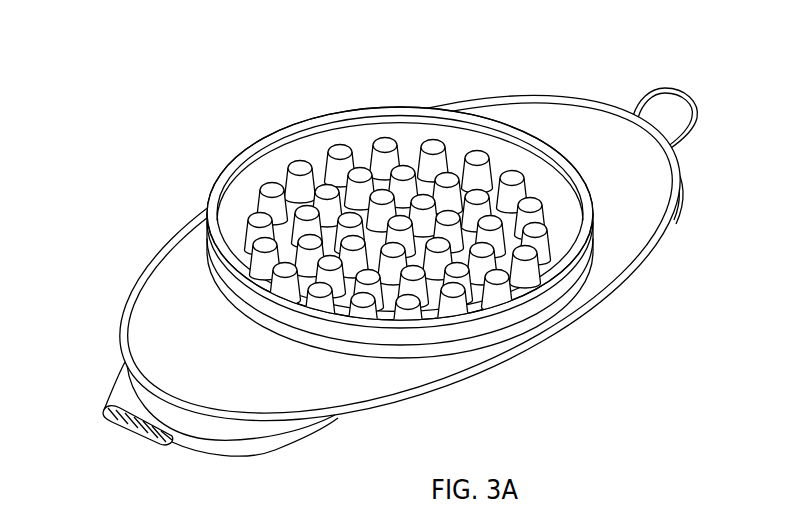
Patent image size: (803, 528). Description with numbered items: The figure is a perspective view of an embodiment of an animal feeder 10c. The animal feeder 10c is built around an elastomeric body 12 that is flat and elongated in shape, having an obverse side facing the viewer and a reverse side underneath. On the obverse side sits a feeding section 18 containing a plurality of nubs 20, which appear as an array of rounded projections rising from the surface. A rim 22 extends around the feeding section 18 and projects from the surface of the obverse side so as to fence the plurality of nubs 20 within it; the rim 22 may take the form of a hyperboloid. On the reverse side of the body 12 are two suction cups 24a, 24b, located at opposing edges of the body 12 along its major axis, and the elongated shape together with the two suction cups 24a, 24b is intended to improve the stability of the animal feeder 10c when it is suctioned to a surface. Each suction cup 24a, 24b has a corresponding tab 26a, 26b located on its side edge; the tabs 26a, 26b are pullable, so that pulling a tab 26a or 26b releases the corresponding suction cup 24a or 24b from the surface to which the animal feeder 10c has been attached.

The animal feeder 10c is at (395, 268).
The elastomeric body 12 is at (395, 268).
The feeding section 18 is at (347, 92).
The nubs 20 is at (494, 278).
The rim 22 is at (230, 170).
The suction cup 24a is at (267, 446).
The suction cup 24b is at (683, 196).
The tab 26a is at (103, 413).
The tab 26b is at (666, 92).